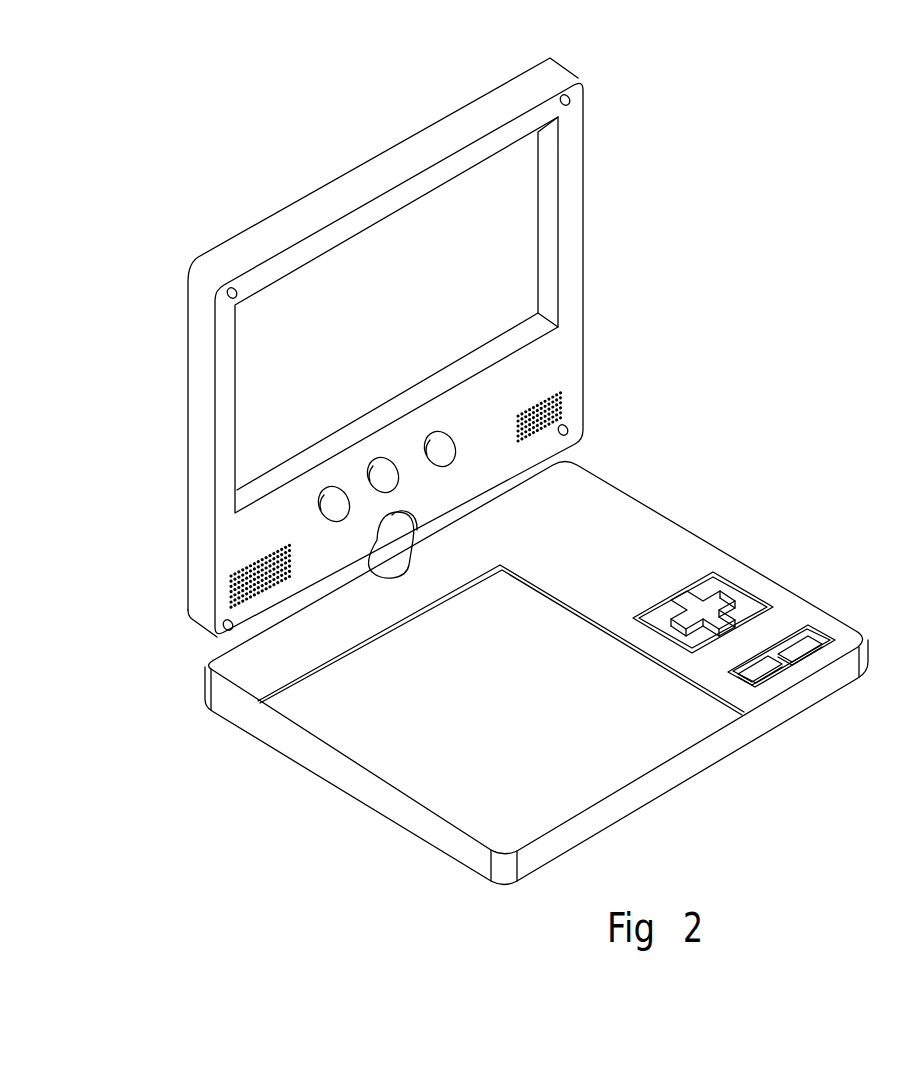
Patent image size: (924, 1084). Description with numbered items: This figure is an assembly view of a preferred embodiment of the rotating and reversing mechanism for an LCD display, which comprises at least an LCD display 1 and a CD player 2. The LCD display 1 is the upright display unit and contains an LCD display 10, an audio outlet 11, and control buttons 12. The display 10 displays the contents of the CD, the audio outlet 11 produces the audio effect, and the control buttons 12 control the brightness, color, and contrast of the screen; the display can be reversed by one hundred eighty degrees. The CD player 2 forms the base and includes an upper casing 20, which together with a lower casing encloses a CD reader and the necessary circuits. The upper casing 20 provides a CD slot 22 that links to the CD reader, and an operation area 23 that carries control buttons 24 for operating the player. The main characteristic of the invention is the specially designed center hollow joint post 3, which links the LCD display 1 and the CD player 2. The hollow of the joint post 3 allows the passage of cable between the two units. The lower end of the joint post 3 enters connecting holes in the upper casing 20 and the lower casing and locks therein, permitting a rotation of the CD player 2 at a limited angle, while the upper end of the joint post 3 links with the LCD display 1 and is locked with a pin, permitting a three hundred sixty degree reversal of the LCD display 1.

The LCD display 1 is at (595, 243).
The CD player 2 is at (708, 525).
The center hollow joint post 3 is at (378, 566).
The LCD display 10 is at (222, 370).
The audio outlet 11 is at (565, 396).
The control buttons 12 is at (320, 508).
The upper casing 20 is at (358, 793).
The CD slot 22 is at (564, 812).
The operation area 23 is at (744, 589).
The control buttons 24 is at (720, 632).